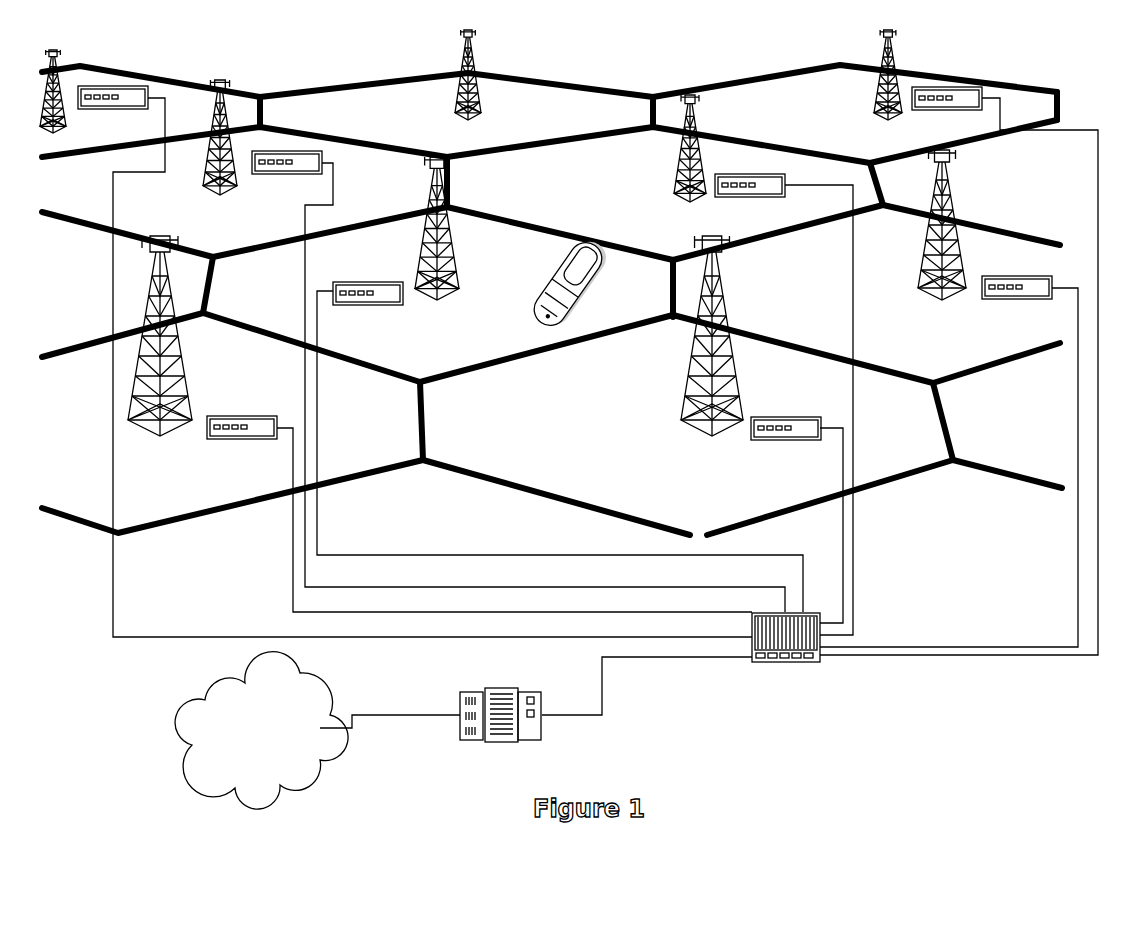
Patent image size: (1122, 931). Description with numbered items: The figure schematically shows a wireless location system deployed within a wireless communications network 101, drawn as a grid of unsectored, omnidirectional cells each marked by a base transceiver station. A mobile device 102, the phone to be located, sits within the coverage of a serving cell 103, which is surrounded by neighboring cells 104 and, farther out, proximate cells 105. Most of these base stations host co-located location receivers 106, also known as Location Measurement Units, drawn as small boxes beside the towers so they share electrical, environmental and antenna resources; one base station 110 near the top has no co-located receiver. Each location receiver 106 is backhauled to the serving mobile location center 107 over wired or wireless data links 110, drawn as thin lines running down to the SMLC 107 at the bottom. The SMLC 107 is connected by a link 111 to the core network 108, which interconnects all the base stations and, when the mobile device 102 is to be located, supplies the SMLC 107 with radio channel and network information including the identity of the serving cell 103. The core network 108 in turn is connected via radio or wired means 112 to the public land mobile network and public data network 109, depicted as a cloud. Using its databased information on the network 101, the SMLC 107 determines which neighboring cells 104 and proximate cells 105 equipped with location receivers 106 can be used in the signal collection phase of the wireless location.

The wireless communications network 101 is at (551, 314).
The mobile device 102 is at (579, 284).
The serving cell 103 is at (437, 245).
The neighboring cells 104 is at (547, 278).
The proximate cells 105 is at (490, 81).
The location receivers 106 is at (565, 277).
The serving mobile location center 107 is at (783, 652).
The core network 108 is at (504, 727).
The public land mobile network and public data network 109 is at (261, 730).
The data links 110 is at (1077, 660).
The SMLC to core network link 111 is at (642, 652).
The radio or wired means 112 is at (413, 730).